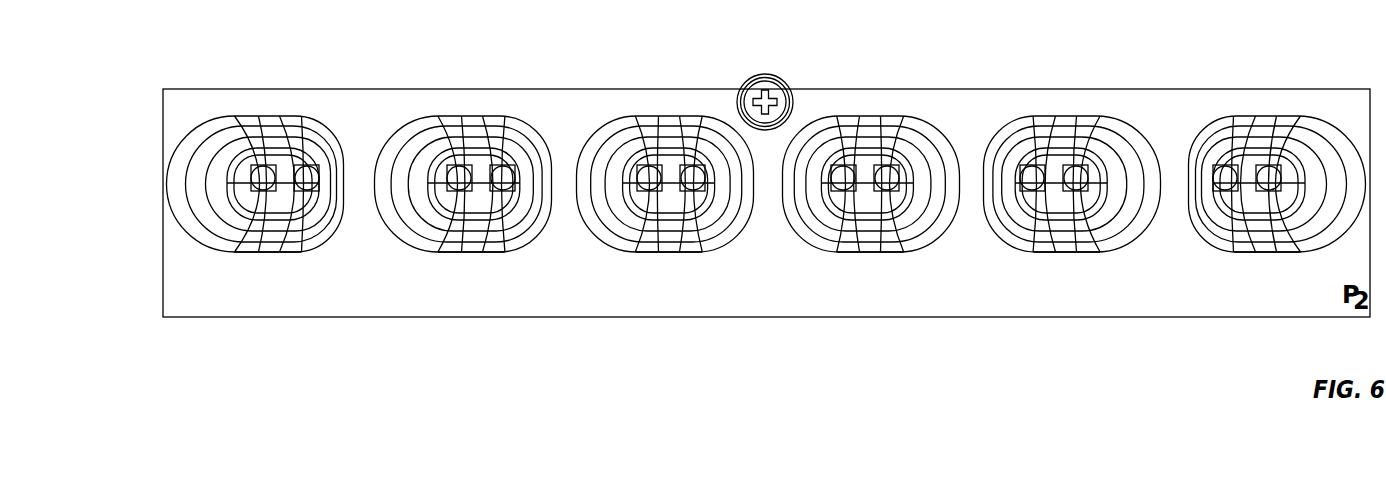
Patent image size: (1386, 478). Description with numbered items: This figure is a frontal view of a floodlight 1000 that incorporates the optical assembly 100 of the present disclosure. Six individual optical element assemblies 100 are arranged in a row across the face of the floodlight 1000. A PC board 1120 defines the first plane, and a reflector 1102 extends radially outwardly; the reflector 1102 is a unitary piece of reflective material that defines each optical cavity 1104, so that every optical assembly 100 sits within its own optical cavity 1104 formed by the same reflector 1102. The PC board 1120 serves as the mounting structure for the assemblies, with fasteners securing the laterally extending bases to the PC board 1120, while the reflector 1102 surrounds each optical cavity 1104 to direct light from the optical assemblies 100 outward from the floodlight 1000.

The optical assembly 100 is at (236, 257).
The optical cavity 1104 is at (220, 140).
The PC board 1120 is at (263, 253).
The reflector 1102 is at (910, 318).
The floodlight 1000 is at (764, 224).